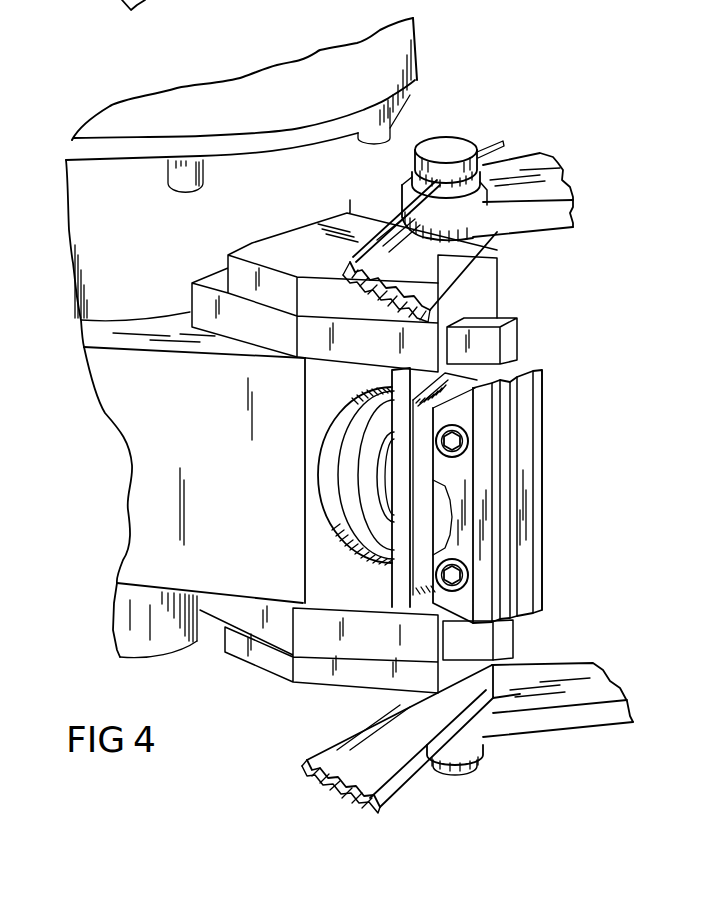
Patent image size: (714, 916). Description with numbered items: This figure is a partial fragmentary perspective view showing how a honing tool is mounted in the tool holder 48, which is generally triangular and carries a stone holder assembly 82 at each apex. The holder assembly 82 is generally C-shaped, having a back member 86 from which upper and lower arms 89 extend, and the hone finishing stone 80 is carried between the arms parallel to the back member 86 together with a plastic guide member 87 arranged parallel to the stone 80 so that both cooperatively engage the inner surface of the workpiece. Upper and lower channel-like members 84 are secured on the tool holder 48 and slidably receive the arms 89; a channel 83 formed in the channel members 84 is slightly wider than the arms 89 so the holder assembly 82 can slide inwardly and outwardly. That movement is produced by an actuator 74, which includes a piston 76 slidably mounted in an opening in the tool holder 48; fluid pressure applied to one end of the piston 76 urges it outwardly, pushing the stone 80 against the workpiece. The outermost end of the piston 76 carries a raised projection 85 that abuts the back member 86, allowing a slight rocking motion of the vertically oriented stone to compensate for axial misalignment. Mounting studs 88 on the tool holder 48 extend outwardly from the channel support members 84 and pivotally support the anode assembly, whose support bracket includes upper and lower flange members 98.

The tool holder 48 is at (150, 456).
The actuator 74 is at (318, 484).
The piston 76 is at (380, 505).
The hone finishing stone 80 is at (538, 419).
The holder assembly 82 is at (546, 508).
The channel 83 is at (470, 312).
The channel-like member 84 is at (310, 340).
The raised projection 85 is at (362, 520).
The back member 86 is at (405, 568).
The plastic guide member 87 is at (512, 470).
The mounting stud 88 is at (450, 195).
The arm 89 is at (512, 331).
The flange member 98 is at (392, 237).